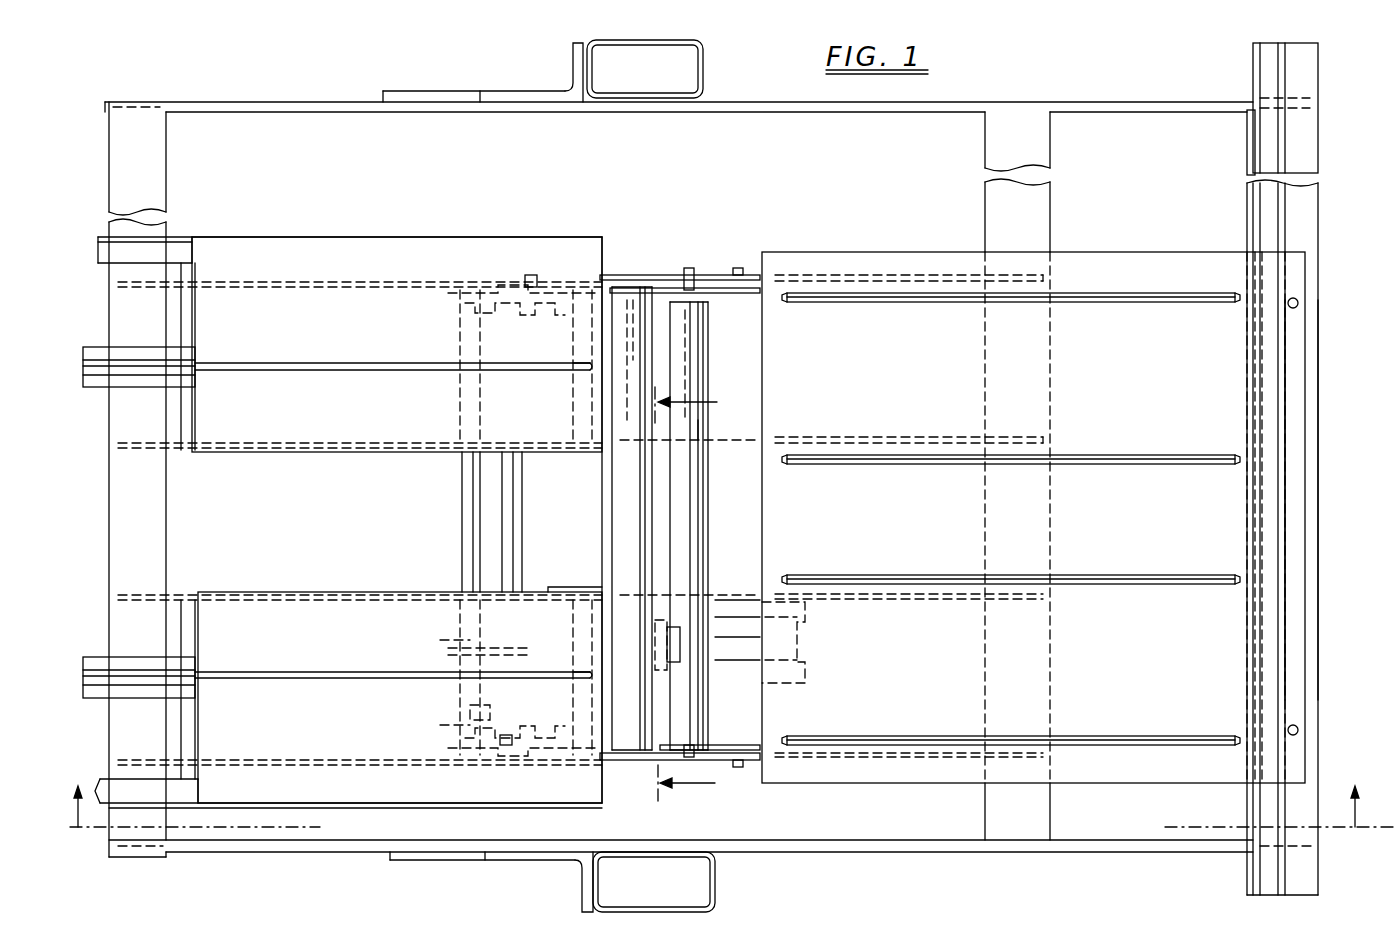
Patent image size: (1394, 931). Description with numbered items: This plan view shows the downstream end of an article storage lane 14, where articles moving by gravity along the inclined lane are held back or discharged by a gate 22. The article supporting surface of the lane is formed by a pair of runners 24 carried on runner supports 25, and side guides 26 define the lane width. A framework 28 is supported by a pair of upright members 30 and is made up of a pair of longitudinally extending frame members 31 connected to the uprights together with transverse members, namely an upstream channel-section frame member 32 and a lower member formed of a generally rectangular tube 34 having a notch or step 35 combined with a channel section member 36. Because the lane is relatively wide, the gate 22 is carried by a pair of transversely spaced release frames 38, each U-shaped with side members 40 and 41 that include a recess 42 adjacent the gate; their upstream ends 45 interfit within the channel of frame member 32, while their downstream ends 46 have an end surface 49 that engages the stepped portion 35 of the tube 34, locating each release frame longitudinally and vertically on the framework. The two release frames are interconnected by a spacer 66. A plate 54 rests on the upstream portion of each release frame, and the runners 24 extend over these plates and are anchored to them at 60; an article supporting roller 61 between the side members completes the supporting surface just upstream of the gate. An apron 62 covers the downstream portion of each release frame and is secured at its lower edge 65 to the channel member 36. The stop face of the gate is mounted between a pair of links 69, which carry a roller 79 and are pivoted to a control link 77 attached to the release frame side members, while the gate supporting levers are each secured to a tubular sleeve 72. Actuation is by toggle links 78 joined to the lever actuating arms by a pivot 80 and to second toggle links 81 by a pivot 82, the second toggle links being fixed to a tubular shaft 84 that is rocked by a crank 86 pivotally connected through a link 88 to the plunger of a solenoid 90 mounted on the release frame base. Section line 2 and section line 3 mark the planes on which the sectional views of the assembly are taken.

The section line 2- 2 is at (732, 792).
The section line 3- 3 is at (701, 599).
The storage lane 14 is at (1310, 403).
The gate 22 is at (716, 382).
The runners 24 is at (352, 368).
The runner supports 25 is at (104, 390).
The side guides 26 is at (195, 237).
The framework 28 is at (1012, 92).
The upright members 30 is at (705, 80).
The longitudinally extending frame members 31 is at (1120, 98).
The upstream transverse frame member 32 is at (168, 565).
The rectangular tube 34 is at (985, 690).
The notch or step 35 is at (1053, 655).
The channel section member 36 is at (1318, 590).
The release frame 38 is at (820, 448).
The side member 40 is at (876, 440).
The side member 41 is at (850, 275).
The recess 42 is at (688, 280).
The upstream end 45 is at (155, 288).
The downstream end 46 is at (1000, 285).
The end surface 49 is at (1053, 438).
The plate 54 is at (405, 592).
The runner anchorage 60 is at (592, 368).
The article supporting roller 61 is at (602, 548).
The apron 62 is at (1033, 517).
The lower edge of apron 65 is at (1306, 498).
The spacer 66 is at (520, 545).
The links 69 is at (712, 300).
The tubular sleeve 72 is at (573, 420).
The control link 77 is at (708, 290).
The toggle links 78 is at (535, 308).
The roller 79 is at (702, 430).
The pivot 80 is at (553, 310).
The second toggle link 81 is at (500, 745).
The pivot 82 is at (470, 712).
The tubular shaft 84 is at (452, 725).
The crank 86 is at (438, 640).
The link 88 is at (562, 652).
The solenoid 90 is at (806, 650).